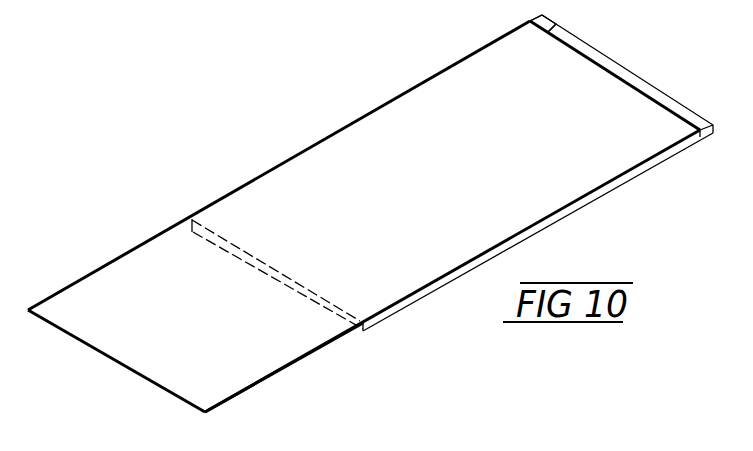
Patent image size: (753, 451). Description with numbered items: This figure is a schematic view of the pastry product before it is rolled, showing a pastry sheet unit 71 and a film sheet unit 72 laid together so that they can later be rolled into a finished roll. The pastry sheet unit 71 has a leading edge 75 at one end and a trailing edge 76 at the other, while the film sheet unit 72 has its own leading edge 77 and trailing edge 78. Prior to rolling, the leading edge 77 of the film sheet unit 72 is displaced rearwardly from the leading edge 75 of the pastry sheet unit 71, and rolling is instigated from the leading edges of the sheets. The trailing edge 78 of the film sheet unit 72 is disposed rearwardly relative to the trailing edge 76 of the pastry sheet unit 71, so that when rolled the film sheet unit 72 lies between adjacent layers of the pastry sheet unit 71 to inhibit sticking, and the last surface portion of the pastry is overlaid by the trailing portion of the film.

The pastry sheet unit 71 is at (610, 189).
The film sheet unit 72 is at (293, 362).
The leading edge of the pastry sheet unit 75 is at (605, 52).
The trailing edge of the pastry sheet unit 76 is at (362, 328).
The leading edge of the film sheet unit 77 is at (558, 26).
The trailing edge of the film sheet unit 78 is at (152, 384).